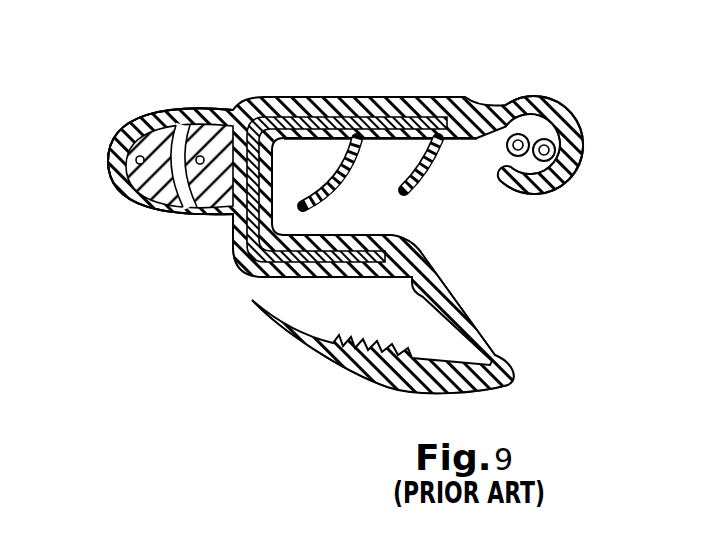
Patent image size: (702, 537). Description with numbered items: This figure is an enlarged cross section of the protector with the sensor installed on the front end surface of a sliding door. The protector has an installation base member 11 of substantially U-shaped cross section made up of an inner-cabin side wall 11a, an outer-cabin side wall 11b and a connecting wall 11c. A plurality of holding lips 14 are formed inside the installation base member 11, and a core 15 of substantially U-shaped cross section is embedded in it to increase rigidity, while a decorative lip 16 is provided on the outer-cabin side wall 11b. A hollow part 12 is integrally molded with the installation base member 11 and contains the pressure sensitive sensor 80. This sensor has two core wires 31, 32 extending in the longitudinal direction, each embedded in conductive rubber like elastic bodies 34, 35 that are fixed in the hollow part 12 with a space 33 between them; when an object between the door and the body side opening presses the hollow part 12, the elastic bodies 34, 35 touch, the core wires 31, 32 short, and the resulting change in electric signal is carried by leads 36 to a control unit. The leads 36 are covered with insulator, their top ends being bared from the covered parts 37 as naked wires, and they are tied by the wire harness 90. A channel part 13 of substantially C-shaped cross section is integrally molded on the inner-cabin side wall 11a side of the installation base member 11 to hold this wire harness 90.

The installation base member 11 is at (403, 97).
The inner-cabin side wall 11a is at (352, 97).
The outer-cabin side wall 11b is at (330, 277).
The connecting wall 11c is at (237, 260).
The hollow part 12 is at (218, 110).
The channel part 13 is at (568, 108).
The holding lips 14 is at (305, 210).
The core 15 is at (263, 277).
The decorative lip 16 is at (345, 375).
The core wire 31 is at (140, 137).
The core wire 32 is at (200, 157).
The space 33 is at (187, 195).
The rubber like elastic body 34 is at (137, 208).
The rubber like elastic body 35 is at (223, 140).
The leads 36 is at (558, 170).
The covered parts 37 is at (550, 139).
The pressure sensitive sensor 80 is at (136, 168).
The wire harness 90 is at (538, 127).